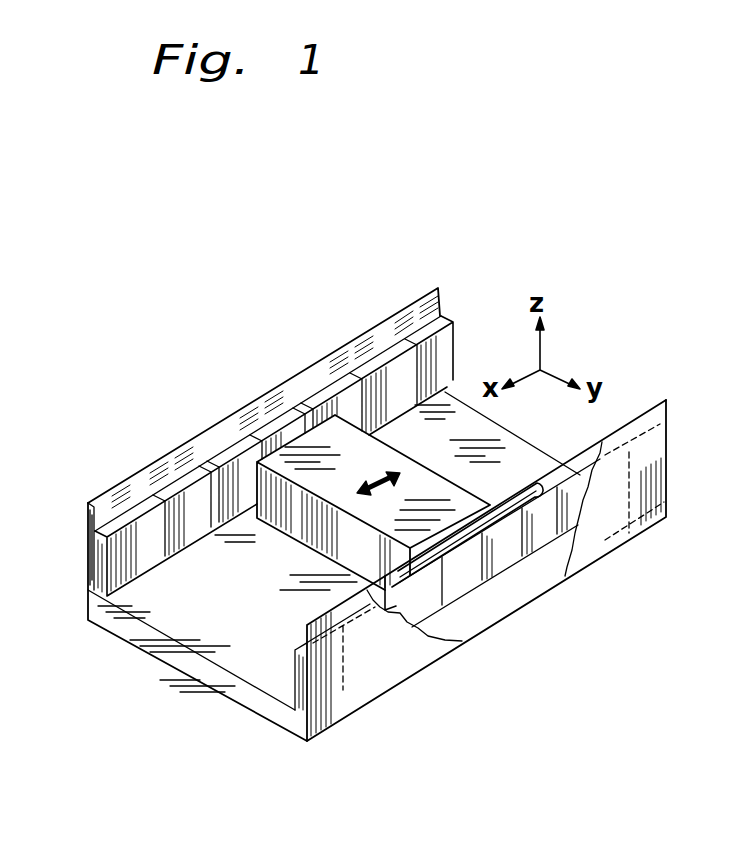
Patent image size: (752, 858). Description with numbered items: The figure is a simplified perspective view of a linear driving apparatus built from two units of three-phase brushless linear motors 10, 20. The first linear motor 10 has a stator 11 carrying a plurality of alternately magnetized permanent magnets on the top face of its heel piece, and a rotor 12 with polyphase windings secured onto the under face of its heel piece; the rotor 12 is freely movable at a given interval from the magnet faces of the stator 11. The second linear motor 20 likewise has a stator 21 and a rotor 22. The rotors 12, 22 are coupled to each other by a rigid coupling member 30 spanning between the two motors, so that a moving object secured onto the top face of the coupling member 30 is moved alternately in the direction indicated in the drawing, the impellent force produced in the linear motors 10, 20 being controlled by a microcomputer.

The linear motor 10 is at (247, 423).
The stator 11 is at (360, 372).
The rotor 12 is at (322, 413).
The linear motor 20 is at (458, 572).
The stator 21 is at (507, 557).
The rotor 22 is at (470, 550).
The coupling member 30 is at (350, 543).